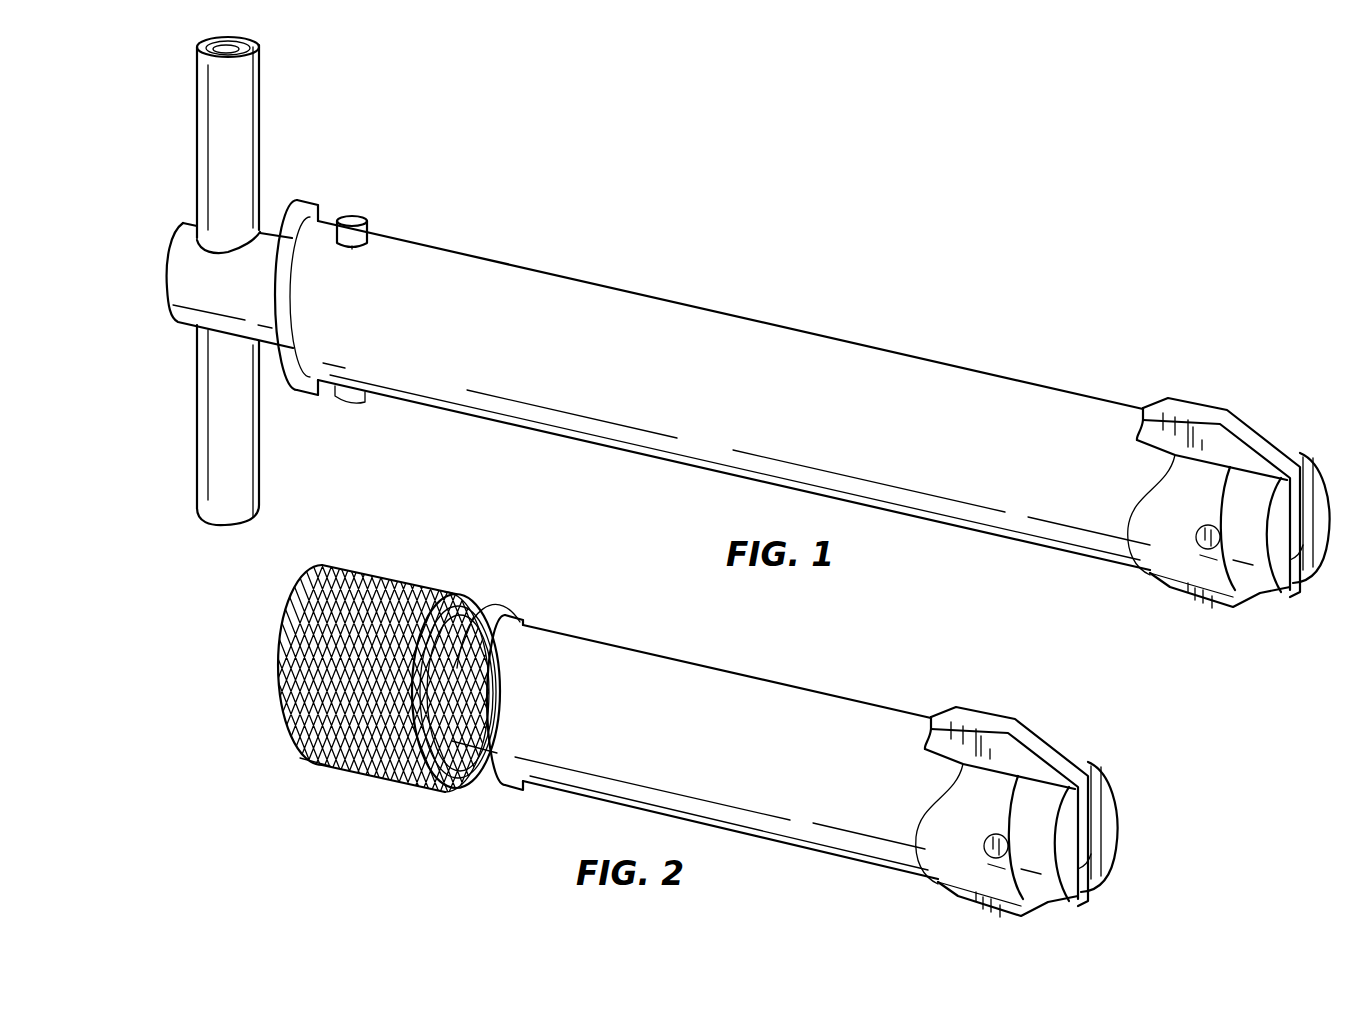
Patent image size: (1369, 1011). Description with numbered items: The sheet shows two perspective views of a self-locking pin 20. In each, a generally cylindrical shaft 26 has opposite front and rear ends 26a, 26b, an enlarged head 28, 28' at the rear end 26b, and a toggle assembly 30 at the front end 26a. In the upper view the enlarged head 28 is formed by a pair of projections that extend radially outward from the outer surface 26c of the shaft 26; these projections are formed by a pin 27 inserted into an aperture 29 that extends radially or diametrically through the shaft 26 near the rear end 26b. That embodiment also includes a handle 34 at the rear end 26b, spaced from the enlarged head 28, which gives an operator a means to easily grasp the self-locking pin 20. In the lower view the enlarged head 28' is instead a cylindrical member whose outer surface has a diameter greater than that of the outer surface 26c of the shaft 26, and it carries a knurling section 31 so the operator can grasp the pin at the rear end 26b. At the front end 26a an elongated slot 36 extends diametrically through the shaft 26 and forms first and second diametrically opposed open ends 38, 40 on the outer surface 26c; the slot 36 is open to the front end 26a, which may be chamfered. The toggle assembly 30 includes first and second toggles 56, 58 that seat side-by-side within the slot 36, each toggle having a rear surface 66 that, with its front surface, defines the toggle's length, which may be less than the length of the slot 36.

In FIG. 1, the self-locking pin 20 is at (837, 260).
In FIG. 2, the self-locking pin 20 is at (490, 807).
In FIG. 1, the shaft 26 is at (643, 332).
In FIG. 2, the shaft 26 is at (790, 700).
In FIG. 1, the front end 26a is at (1323, 473).
In FIG. 2, the front end 26a is at (1108, 787).
In FIG. 1, the rear end 26b is at (297, 263).
In FIG. 2, the rear end 26b is at (457, 663).
In FIG. 1, the outer surface 26c is at (736, 454).
In FIG. 2, the outer surface 26c is at (688, 786).
In FIG. 1, the pin 27 is at (368, 233).
In FIG. 1, the enlarged head 28 is at (375, 276).
In FIG. 2, the enlarged head 28' is at (390, 657).
In FIG. 1, the aperture 29 is at (368, 247).
In FIG. 1, the toggle assembly 30 is at (1230, 400).
In FIG. 2, the toggle assembly 30 is at (1006, 771).
In FIG. 2, the knurling section 31 is at (357, 763).
In FIG. 1, the handle 34 is at (187, 276).
In FIG. 1, the slot 36 is at (1130, 560).
In FIG. 2, the slot 36 is at (927, 843).
In FIG. 1, the first open end 38 is at (1300, 457).
In FIG. 2, the first open end 38 is at (1090, 762).
In FIG. 1, the second open end 40 is at (1313, 563).
In FIG. 2, the second open end 40 is at (1108, 893).
In FIG. 1, the first toggle 56 is at (1157, 400).
In FIG. 2, the first toggle 56 is at (962, 692).
In FIG. 1, the second toggle 58 is at (1233, 607).
In FIG. 2, the second toggle 58 is at (1012, 922).
In FIG. 1, the rear surface 66 is at (1140, 423).
In FIG. 2, the rear surface 66 is at (902, 695).